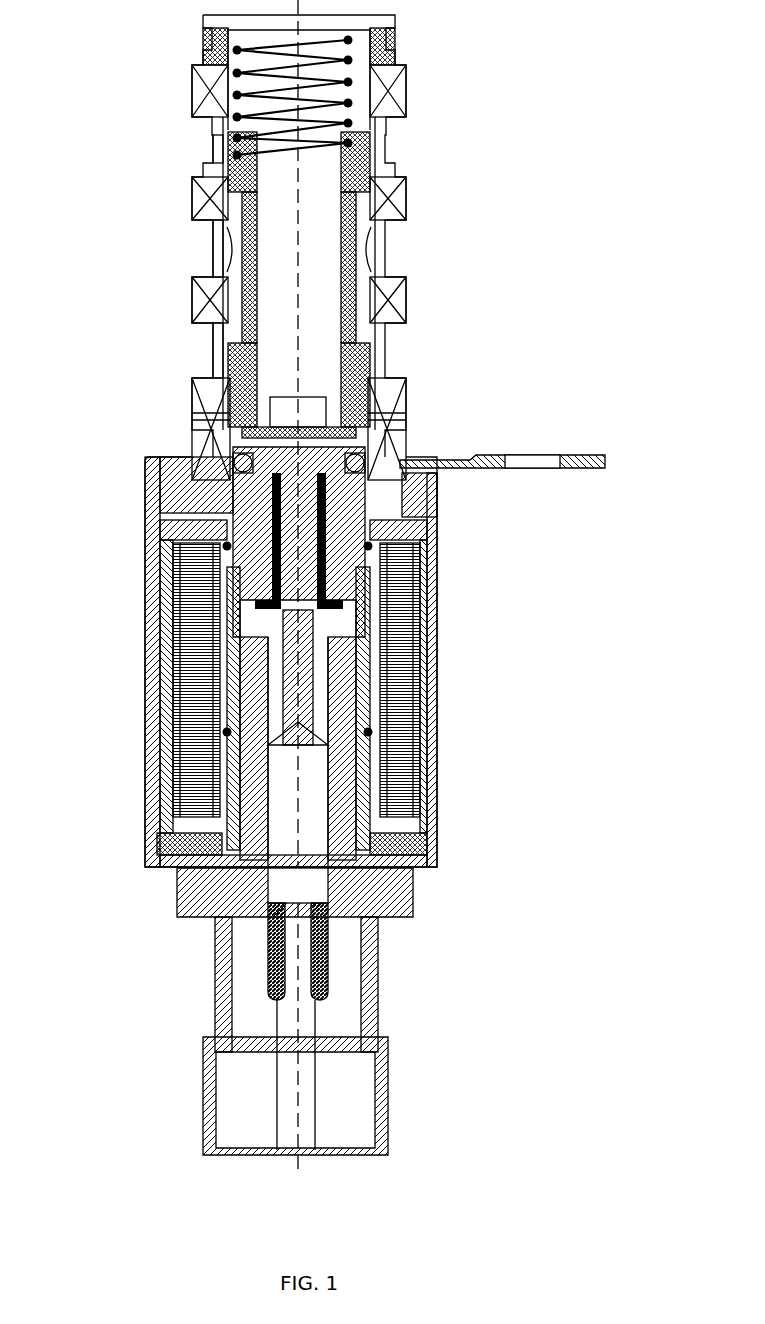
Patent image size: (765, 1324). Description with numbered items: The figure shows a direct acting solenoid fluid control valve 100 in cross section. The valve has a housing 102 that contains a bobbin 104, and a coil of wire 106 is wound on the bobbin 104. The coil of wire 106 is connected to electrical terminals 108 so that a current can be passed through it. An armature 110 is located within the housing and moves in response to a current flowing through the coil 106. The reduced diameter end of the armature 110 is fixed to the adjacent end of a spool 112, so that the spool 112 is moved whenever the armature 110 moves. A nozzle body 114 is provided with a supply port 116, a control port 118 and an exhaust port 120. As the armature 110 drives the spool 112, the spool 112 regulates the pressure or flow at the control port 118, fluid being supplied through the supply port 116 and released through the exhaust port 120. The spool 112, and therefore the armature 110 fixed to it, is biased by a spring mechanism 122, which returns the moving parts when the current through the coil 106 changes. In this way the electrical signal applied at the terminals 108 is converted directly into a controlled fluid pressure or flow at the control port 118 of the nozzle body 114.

The direct acting solenoid fluid control valve 100 is at (625, 153).
The housing 102 is at (152, 692).
The bobbin 104 is at (163, 718).
The coil of wire 106 is at (193, 748).
The electrical terminals 108 is at (322, 997).
The armature 110 is at (307, 698).
The spool 112 is at (226, 303).
The nozzle body 114 is at (192, 198).
The supply port 116 is at (213, 359).
The control port 118 is at (206, 255).
The exhaust port 120 is at (208, 147).
The spring mechanism 122 is at (373, 133).